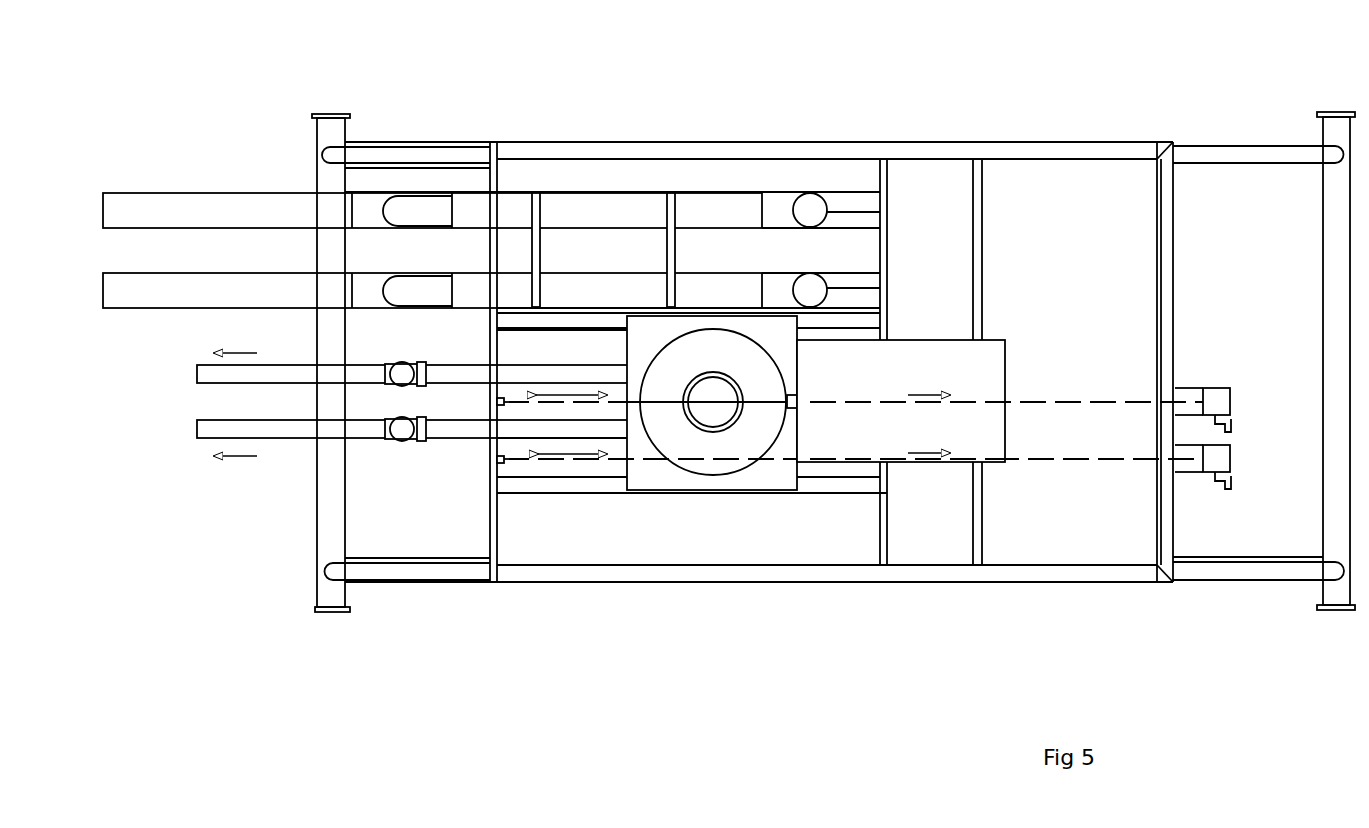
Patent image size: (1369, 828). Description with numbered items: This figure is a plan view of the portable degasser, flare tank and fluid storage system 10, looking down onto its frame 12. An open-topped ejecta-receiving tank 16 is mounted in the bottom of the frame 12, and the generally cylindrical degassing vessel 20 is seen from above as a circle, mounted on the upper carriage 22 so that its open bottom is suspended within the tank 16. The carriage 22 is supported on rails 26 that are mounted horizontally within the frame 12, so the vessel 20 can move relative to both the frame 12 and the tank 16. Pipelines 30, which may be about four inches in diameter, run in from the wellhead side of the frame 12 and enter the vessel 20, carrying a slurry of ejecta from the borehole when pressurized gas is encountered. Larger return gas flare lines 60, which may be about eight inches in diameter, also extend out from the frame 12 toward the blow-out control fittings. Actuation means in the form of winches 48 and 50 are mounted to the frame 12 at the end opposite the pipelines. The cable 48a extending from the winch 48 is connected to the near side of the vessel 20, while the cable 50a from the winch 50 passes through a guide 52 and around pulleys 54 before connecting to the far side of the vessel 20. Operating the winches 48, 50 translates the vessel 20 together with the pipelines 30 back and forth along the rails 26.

The portable degasser, flare tank and fluid storage system 10 is at (1163, 92).
The frame 12 is at (1123, 138).
The open-topped ejecta-receiving tank 16 is at (672, 538).
The degassing vessel 20 is at (765, 463).
The upper carriage 22 is at (708, 493).
The rails 26 is at (585, 495).
The pipelines 30 is at (442, 432).
The winch 48 is at (1233, 392).
The cable 48a is at (1107, 400).
The winch 50 is at (1233, 473).
The cable 50a is at (1087, 461).
The guide 52 is at (940, 465).
The pulleys 54 is at (495, 419).
The return gas flare lines 60 is at (186, 272).